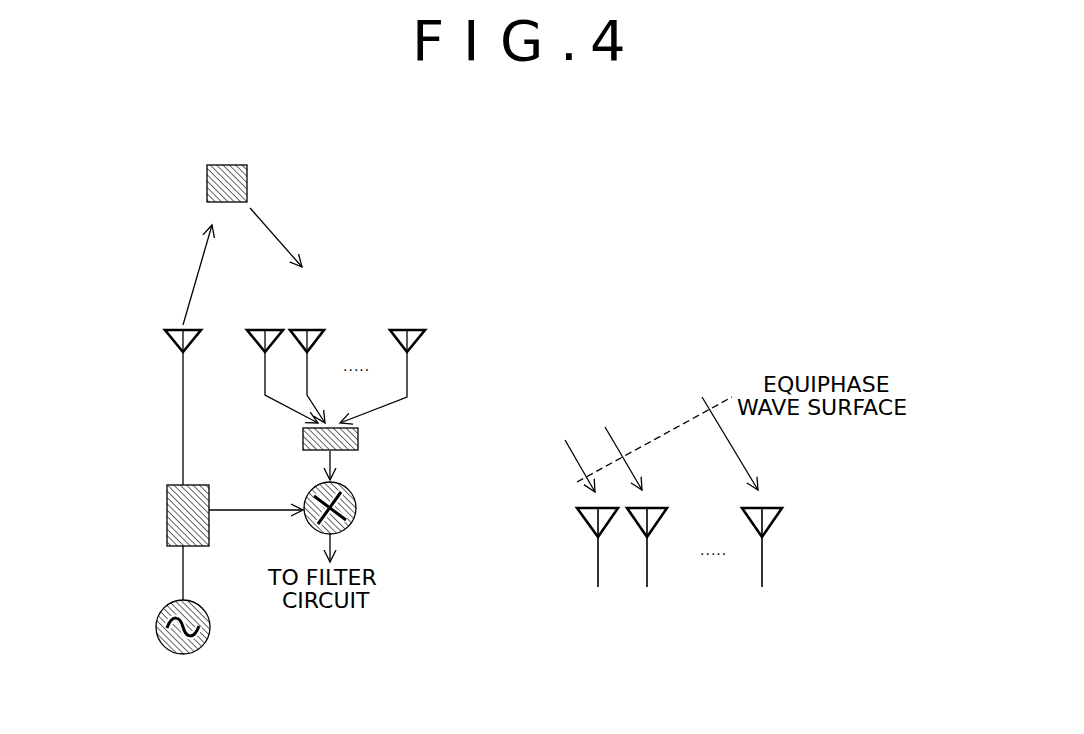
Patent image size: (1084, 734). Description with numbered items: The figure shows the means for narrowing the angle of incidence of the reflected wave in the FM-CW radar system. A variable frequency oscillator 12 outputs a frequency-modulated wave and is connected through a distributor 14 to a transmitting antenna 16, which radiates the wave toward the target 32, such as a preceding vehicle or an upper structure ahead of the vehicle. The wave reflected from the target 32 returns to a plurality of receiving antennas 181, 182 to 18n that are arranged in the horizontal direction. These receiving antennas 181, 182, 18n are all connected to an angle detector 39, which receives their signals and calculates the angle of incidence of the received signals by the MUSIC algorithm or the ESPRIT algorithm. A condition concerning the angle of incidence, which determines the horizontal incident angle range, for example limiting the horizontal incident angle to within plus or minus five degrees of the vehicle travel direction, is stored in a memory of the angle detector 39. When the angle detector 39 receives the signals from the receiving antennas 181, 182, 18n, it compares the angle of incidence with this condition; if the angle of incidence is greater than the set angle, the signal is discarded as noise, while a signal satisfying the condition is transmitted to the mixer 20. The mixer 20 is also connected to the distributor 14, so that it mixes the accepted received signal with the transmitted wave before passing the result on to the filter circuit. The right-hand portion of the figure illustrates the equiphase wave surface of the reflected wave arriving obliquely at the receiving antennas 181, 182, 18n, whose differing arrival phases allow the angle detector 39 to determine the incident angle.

The variable frequency oscillator 12 is at (160, 645).
The distributor 14 is at (167, 507).
The transmitting antenna 16 is at (172, 347).
The receiving antenna 181 is at (613, 597).
The receiving antenna 182 is at (662, 597).
The receiving antenna 18n is at (777, 597).
The mixer 20 is at (357, 510).
The target 32 is at (229, 166).
The angle detector 39 is at (358, 441).